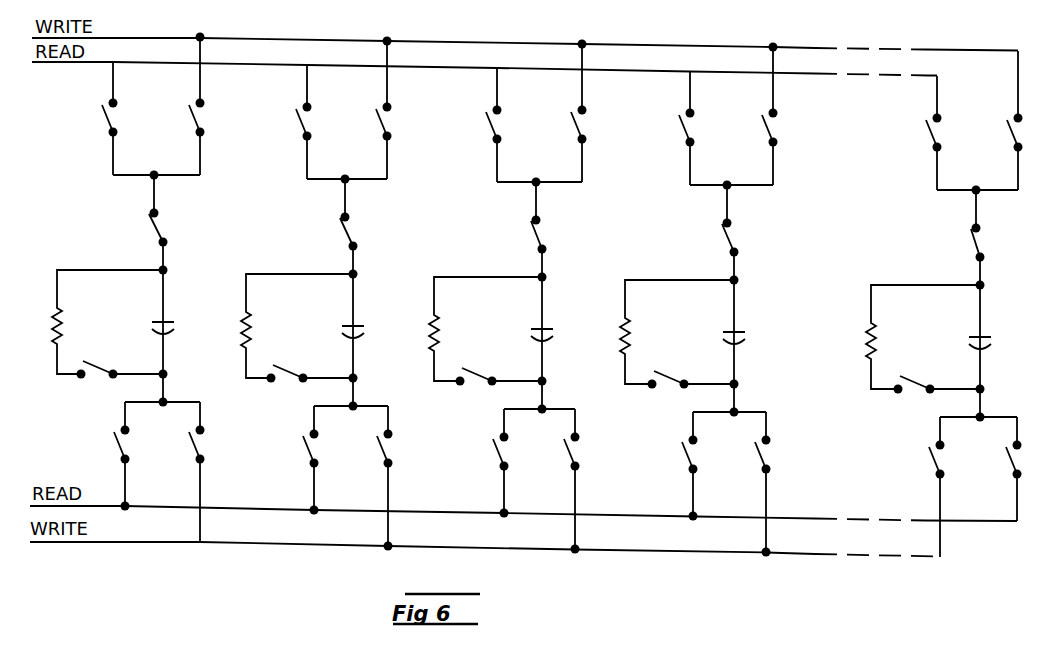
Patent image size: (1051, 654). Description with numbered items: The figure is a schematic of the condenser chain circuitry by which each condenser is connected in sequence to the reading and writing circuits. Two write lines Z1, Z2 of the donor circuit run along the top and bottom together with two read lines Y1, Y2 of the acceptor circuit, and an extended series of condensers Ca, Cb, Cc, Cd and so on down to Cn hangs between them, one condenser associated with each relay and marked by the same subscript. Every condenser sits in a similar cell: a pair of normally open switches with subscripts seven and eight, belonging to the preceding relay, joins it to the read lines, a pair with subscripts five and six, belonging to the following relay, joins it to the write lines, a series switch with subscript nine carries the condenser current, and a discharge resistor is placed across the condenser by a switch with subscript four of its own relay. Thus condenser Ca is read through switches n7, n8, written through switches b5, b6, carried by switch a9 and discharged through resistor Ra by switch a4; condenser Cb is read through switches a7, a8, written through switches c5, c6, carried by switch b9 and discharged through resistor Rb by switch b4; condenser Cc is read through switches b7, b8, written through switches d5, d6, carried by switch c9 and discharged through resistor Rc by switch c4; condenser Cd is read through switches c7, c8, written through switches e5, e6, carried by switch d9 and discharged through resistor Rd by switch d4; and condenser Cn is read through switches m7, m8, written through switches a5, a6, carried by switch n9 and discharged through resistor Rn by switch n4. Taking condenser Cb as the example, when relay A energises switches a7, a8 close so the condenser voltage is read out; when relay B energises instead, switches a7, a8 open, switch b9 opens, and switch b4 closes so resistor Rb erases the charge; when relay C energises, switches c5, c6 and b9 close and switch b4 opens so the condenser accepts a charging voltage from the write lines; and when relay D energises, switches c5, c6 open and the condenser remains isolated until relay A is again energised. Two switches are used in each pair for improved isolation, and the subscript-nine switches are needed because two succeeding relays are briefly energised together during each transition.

The write line Z1 is at (525, 33).
The read line Y1 is at (484, 59).
The read line Y2 is at (523, 501).
The write line Z2 is at (485, 537).
The normally open switch n7 is at (97, 118).
The normally open switch b5 is at (208, 104).
The normally open switch a9 is at (169, 228).
The resistor Ra is at (92, 322).
The condenser Ca is at (145, 324).
The normally open switch a4 is at (120, 383).
The normally open switch n8 is at (106, 456).
The normally open switch b6 is at (208, 472).
The normally open switch a7 is at (291, 122).
The normally open switch c5 is at (394, 108).
The normally open switch b9 is at (360, 232).
The resistor Rb is at (282, 326).
The condenser Cb is at (335, 328).
The normally open switch b4 is at (310, 387).
The normally open switch a8 is at (296, 460).
The normally open switch c6 is at (396, 478).
The normally open switch b7 is at (481, 125).
The normally open switch d5 is at (590, 111).
The normally open switch c9 is at (549, 235).
The resistor Rc is at (470, 329).
The condenser Cc is at (524, 331).
The normally open switch c4 is at (499, 390).
The normally open switch b8 is at (487, 463).
The normally open switch d6 is at (583, 481).
The normally open switch c7 is at (674, 128).
The normally open switch e5 is at (781, 114).
The normally open switch d9 is at (741, 238).
The resistor Rd is at (662, 332).
The condenser Cd is at (716, 334).
The normally open switch d4 is at (691, 393).
The normally open switch c8 is at (676, 466).
The normally open switch e6 is at (774, 484).
The normally open switch m7 is at (911, 133).
The normally open switch a5 is at (1026, 120).
The normally open switch n9 is at (989, 243).
The resistor Rn is at (908, 337).
The condenser Cn is at (962, 339).
The normally open switch n4 is at (937, 398).
The normally open switch m8 is at (921, 487).
The normally open switch a6 is at (1025, 469).